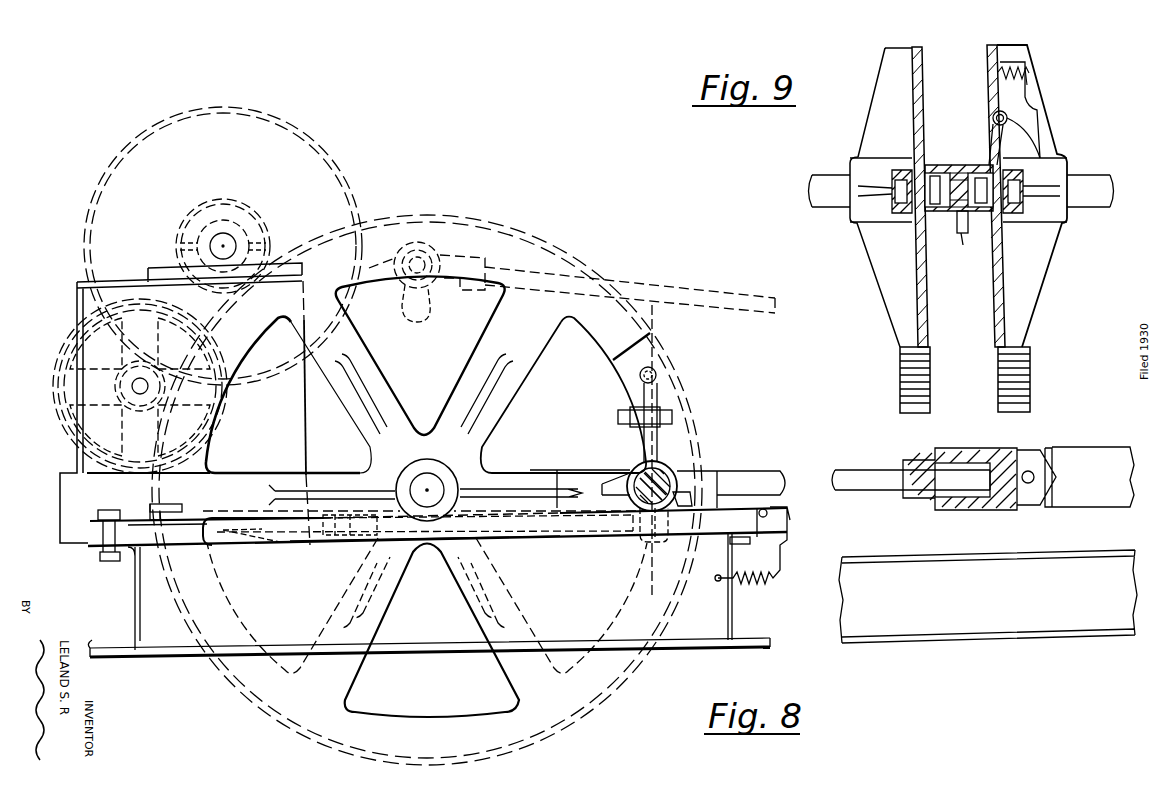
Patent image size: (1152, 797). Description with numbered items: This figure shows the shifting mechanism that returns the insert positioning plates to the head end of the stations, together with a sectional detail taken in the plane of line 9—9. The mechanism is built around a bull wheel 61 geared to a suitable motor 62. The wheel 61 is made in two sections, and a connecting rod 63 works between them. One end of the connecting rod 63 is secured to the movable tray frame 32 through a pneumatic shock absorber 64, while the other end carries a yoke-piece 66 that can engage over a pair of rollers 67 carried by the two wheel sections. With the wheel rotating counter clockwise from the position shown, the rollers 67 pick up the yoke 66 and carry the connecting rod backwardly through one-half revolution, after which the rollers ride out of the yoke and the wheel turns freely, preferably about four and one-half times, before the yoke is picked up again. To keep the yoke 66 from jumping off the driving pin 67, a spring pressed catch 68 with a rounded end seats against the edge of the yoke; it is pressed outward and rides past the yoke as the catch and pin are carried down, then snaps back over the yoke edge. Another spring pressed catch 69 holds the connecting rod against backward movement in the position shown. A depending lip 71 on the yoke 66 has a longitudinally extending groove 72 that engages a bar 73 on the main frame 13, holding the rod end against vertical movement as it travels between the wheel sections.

In FIG. 8, the section line 9— 9 is at (628, 313).
In FIG. 8, the main frame 13 is at (968, 622).
In FIG. 8, the movable frame 32 is at (1072, 455).
In FIG. 8, the bull wheel 61 is at (455, 743).
In FIG. 9, the bull wheel 61 is at (900, 383).
In FIG. 8, the motor 62 is at (68, 388).
In FIG. 8, the connecting rod 63 is at (698, 285).
In FIG. 8, the pneumatic shock absorber 64 is at (984, 448).
In FIG. 8, the yoke-piece 66 is at (415, 242).
In FIG. 9, the yoke-piece 66 is at (962, 166).
In FIG. 8, the rollers 67 is at (432, 296).
In FIG. 9, the rollers 67 is at (934, 166).
In FIG. 8, the spring pressed catch 68 is at (657, 440).
In FIG. 9, the spring pressed catch 68 is at (993, 143).
In FIG. 8, the spring pressed catch 69 is at (681, 503).
In FIG. 8, the depending lip 71 is at (642, 546).
In FIG. 9, the depending lip 71 is at (963, 245).
In FIG. 8, the longitudinally extending groove 72 is at (630, 532).
In FIG. 9, the longitudinally extending groove 72 is at (952, 238).
In FIG. 8, the bar 73 is at (284, 532).